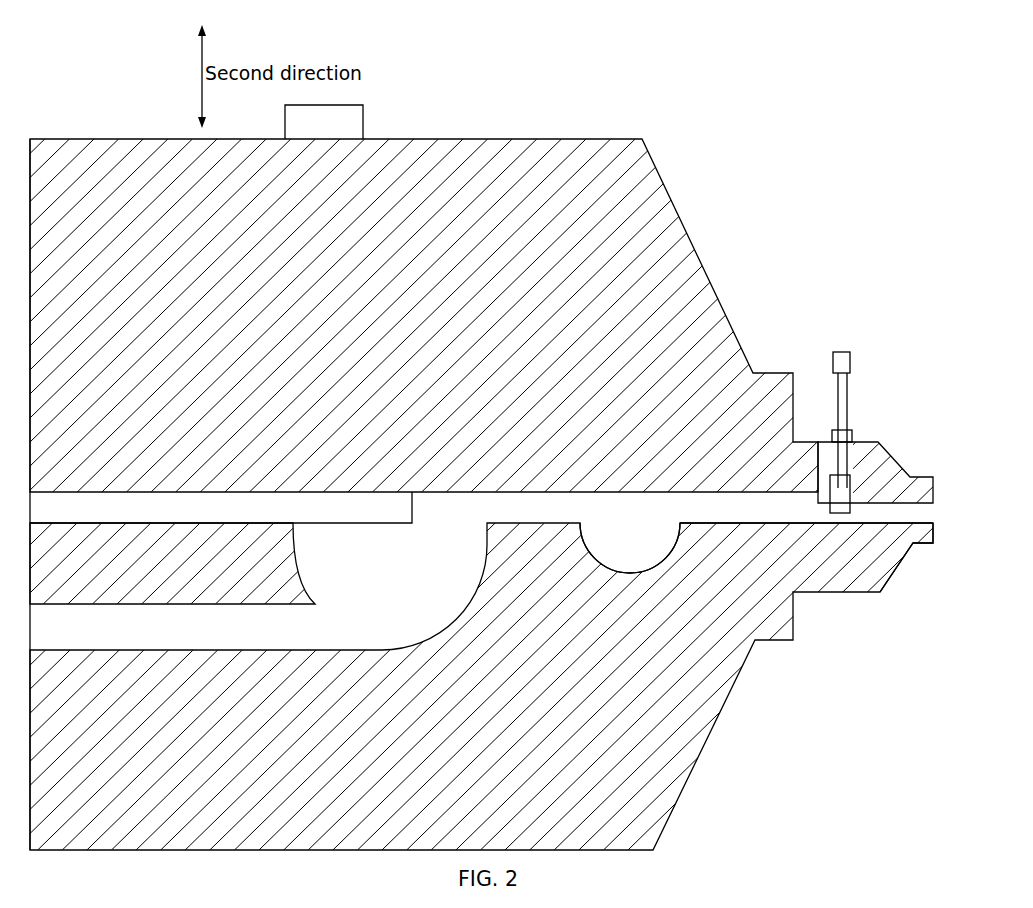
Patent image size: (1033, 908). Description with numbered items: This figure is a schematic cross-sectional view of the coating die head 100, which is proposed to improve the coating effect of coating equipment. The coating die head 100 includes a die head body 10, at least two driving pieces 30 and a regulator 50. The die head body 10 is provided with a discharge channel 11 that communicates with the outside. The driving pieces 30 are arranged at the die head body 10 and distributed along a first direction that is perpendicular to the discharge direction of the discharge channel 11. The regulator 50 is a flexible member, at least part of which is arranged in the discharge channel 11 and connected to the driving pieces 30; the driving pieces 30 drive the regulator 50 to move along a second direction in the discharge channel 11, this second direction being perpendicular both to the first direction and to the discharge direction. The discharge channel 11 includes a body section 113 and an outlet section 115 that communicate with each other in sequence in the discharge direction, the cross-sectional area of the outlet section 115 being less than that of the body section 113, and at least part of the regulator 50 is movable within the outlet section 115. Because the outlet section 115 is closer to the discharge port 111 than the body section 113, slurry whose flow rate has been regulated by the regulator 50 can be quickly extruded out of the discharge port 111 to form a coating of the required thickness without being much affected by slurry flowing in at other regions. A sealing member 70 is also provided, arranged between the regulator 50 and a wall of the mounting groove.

The coating die head 100 is at (515, 65).
The die head body 10 is at (588, 172).
The discharge channel 11 is at (880, 657).
The discharge port 111 is at (933, 523).
The body section 113 is at (652, 513).
The outlet section 115 is at (867, 524).
The driving piece 30 is at (837, 400).
The regulator 50 is at (852, 497).
The sealing member 70 is at (855, 457).